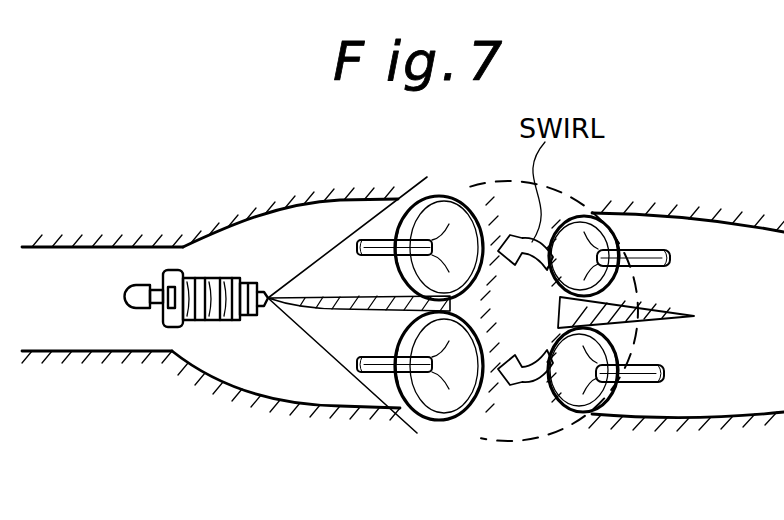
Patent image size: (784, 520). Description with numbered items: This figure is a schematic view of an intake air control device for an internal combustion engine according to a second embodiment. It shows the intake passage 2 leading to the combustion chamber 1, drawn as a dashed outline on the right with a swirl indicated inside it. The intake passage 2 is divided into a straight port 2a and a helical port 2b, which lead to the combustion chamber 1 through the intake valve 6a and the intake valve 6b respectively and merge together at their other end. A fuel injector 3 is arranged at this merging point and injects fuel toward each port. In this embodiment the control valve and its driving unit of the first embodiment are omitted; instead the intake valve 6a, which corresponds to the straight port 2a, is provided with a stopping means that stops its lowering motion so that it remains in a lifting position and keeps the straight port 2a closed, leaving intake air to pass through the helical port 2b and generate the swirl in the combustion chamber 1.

The combustion chamber 1 is at (536, 447).
The intake passage 2 is at (185, 388).
The straight port 2a is at (362, 205).
The helical port 2b is at (345, 390).
The fuel injector 3 is at (213, 278).
The intake valve 6a is at (463, 197).
The intake valve 6b is at (432, 423).